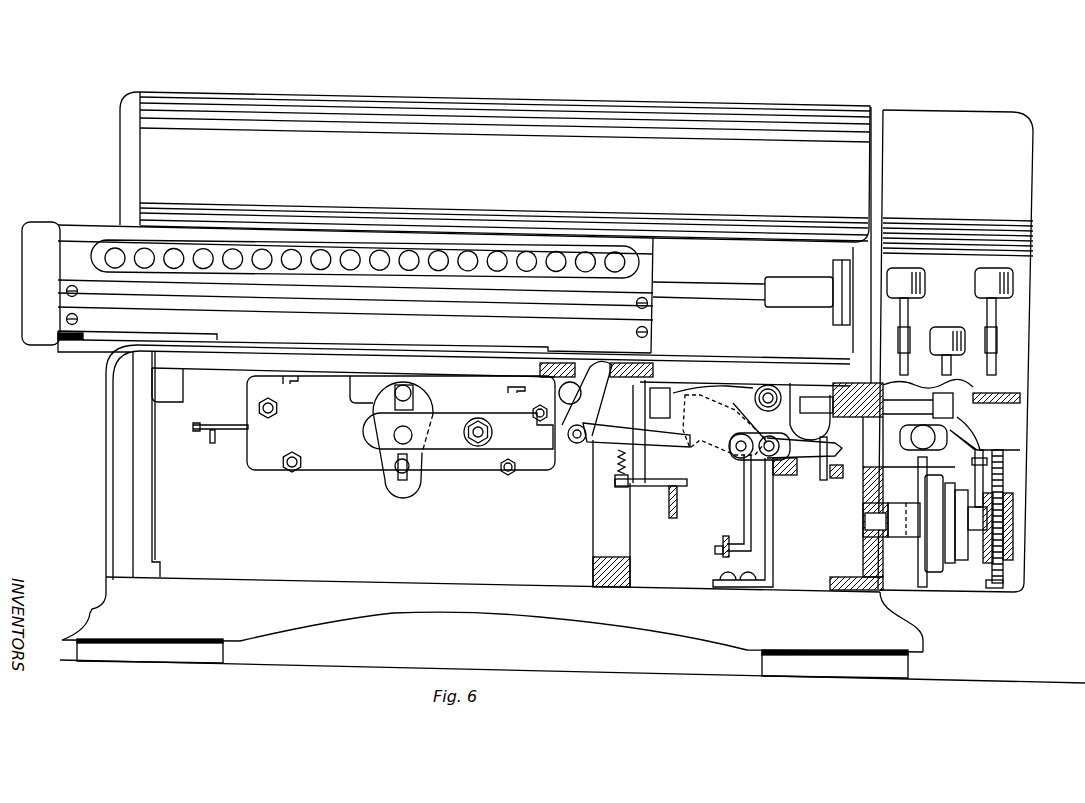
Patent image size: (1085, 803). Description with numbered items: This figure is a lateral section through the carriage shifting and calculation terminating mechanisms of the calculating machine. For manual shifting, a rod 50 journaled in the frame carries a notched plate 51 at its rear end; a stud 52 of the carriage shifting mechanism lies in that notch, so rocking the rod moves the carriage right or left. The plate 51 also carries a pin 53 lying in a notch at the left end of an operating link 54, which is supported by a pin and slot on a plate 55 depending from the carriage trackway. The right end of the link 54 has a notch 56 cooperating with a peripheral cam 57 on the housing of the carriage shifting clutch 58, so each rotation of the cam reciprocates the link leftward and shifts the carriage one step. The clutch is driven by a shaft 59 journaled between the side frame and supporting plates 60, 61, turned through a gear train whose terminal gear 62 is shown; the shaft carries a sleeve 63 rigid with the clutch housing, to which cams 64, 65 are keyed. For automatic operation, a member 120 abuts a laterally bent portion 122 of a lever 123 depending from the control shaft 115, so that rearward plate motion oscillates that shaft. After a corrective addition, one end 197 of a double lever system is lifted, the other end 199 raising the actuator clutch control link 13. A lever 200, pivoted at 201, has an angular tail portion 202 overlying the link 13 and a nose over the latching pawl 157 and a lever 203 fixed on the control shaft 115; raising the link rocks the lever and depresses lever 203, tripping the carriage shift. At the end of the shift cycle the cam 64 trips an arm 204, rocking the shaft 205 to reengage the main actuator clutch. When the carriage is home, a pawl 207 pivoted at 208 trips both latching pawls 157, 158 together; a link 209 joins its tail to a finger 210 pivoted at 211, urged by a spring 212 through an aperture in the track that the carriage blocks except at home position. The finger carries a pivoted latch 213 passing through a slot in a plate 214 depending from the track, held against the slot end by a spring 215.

The actuator clutch control link 13 is at (678, 503).
The manually operable rod 50 is at (393, 478).
The notched plate 51 is at (380, 410).
The stud 52 is at (403, 385).
The pin 53 is at (410, 441).
The operating link 54 is at (453, 441).
The plate 55 is at (320, 436).
The notch 56 is at (920, 462).
The peripheral cam 57 is at (916, 538).
The carriage shifting clutch 58 is at (940, 532).
The shaft 59 is at (866, 528).
The supporting plate 60 is at (992, 588).
The supporting plate 61 is at (1014, 552).
The terminal gear 62 is at (1004, 574).
The sleeve 63 is at (978, 553).
The cam 64 is at (965, 560).
The cam 65 is at (950, 563).
The control shaft 115 is at (846, 436).
The member 120 is at (724, 537).
The laterally bent portion 122 is at (715, 550).
The lever 123 is at (744, 498).
The latching pawl 157 is at (828, 481).
The latching pawl 158 is at (828, 493).
The end of double lever system 197 is at (203, 431).
The end of double lever system 199 is at (684, 479).
The lever 200 is at (752, 430).
The pivot 201 is at (737, 450).
The angular tail portion 202 is at (683, 448).
The lever 203 is at (823, 483).
The arm 204 is at (972, 440).
The shaft 205 is at (955, 405).
The pawl 207 is at (783, 417).
The pivot 208 is at (773, 458).
The link 209 is at (628, 430).
The finger 210 is at (598, 387).
The pivot 211 is at (558, 396).
The spring 212 is at (577, 444).
The pivoted latch 213 is at (618, 456).
The plate 214 is at (644, 487).
The spring 215 is at (615, 481).